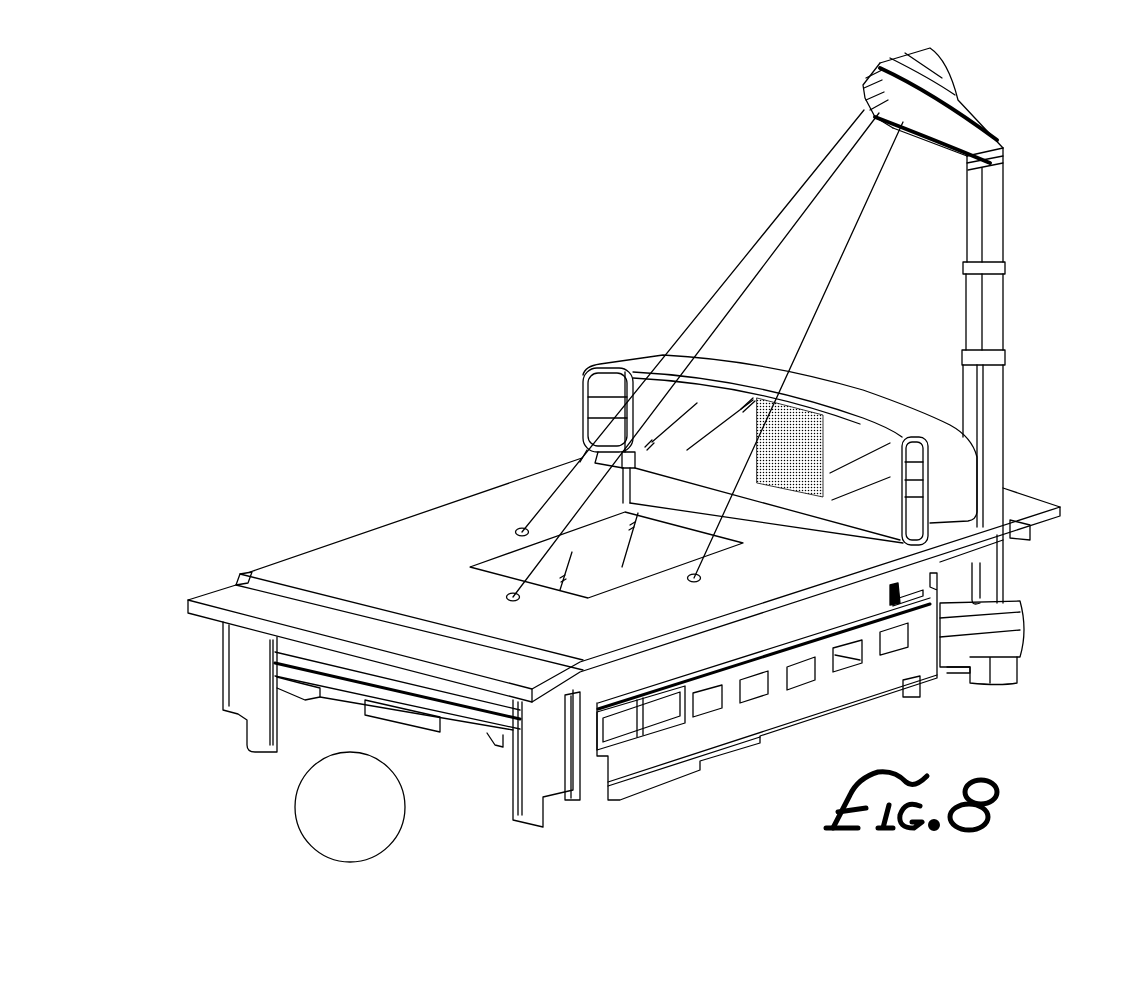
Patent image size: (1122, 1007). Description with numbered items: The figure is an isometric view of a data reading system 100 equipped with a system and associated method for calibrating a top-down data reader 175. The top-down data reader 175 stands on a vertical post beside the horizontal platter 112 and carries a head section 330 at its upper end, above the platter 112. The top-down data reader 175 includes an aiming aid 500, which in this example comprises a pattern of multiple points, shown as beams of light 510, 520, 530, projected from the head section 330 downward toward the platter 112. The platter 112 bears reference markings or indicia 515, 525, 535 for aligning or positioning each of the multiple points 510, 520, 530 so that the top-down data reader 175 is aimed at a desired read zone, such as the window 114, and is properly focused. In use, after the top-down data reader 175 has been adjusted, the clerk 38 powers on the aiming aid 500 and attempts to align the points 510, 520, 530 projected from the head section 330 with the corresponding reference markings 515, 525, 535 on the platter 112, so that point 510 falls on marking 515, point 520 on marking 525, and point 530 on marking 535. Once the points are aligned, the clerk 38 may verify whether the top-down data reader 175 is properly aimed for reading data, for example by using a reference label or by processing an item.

The bi-optic scanner / checkout system 100 is at (583, 299).
The platter 112 is at (360, 562).
The window 114 is at (677, 540).
The top-down data reader 175 is at (1006, 177).
The head section 330 is at (937, 90).
The aiming aid 500 is at (703, 150).
The point 510 is at (805, 185).
The point 520 is at (800, 218).
The point 530 is at (812, 310).
The reference marking 515 is at (515, 530).
The reference marking 525 is at (506, 598).
The reference marking 535 is at (701, 583).
The clerk 38 is at (294, 807).